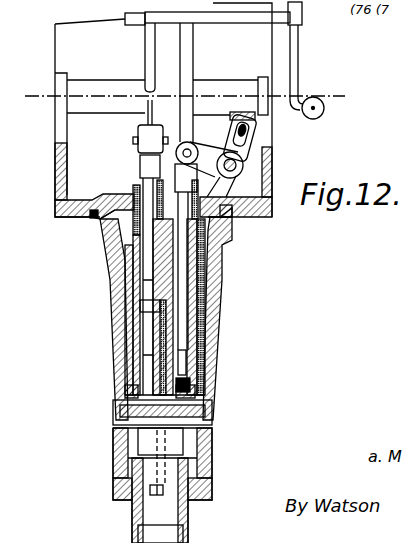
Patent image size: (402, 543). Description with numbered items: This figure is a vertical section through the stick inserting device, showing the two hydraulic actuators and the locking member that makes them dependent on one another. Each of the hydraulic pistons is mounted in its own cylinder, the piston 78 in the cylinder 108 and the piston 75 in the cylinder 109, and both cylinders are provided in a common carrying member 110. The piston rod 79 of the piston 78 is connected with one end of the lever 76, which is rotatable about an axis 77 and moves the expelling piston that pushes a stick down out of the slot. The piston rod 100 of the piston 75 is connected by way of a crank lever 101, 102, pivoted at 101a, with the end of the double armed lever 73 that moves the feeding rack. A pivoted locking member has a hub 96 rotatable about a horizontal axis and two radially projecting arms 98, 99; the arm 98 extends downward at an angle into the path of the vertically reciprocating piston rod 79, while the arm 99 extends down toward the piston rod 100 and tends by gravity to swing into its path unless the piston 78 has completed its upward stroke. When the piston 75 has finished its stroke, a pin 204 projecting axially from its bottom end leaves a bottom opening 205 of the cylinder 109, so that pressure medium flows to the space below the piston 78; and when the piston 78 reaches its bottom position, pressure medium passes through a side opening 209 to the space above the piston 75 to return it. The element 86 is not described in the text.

The double armed lever 73 is at (258, 115).
The hydraulic piston 75 is at (205, 332).
The lever 76 is at (148, 117).
The axis 77 is at (40, 95).
The hydraulic piston 78 is at (137, 338).
The piston rod 79 is at (150, 257).
The link 86 is at (96, 0).
The hub 96 is at (146, 19).
The arm 98 is at (146, 52).
The arm 99 is at (194, 50).
The piston rod 100 is at (222, 253).
The crank lever arm 101 is at (240, 217).
The pivot 101a is at (243, 164).
The crank lever arm 102 is at (247, 147).
The cylinder 108 is at (125, 285).
The cylinder 109 is at (205, 287).
The common carrying member 110 is at (208, 403).
The pin 204 is at (185, 360).
The bottom opening 205 is at (190, 381).
The side opening 209 is at (157, 307).